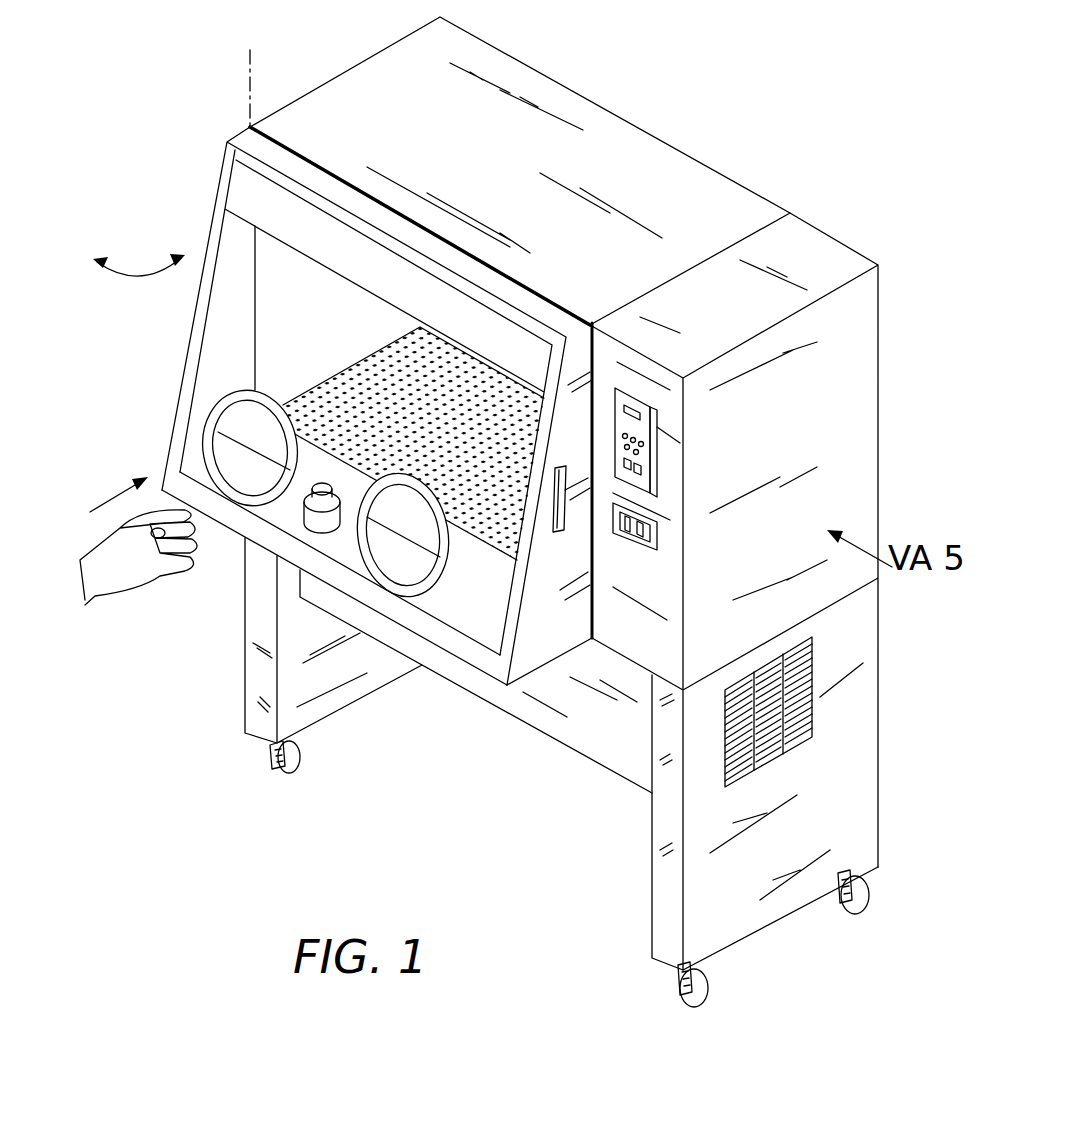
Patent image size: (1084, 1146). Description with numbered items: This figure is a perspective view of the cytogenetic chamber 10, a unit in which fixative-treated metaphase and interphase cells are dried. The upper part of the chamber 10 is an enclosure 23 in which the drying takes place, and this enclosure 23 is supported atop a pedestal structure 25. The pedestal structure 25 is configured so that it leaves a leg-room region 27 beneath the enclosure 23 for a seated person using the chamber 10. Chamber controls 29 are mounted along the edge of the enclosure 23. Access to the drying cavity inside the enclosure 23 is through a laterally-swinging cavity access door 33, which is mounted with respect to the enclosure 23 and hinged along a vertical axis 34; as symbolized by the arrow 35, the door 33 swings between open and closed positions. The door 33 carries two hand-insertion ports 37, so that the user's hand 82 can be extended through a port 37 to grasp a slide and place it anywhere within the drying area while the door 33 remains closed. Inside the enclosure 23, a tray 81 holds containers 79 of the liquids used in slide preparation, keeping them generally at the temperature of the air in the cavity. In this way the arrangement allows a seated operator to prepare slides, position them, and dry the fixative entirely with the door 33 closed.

The chamber 10 is at (564, 485).
The enclosure 23 is at (610, 145).
The pedestal structure 25 is at (750, 908).
The region 27 is at (380, 728).
The chamber controls 29 is at (648, 454).
The cavity access door 33 is at (258, 192).
The vertical axis 34 is at (248, 60).
The arrow 35 is at (131, 279).
The hand-insertion ports 37 is at (248, 484).
The containers 79 is at (312, 513).
The tray 81 is at (480, 617).
The hand 82 is at (133, 568).